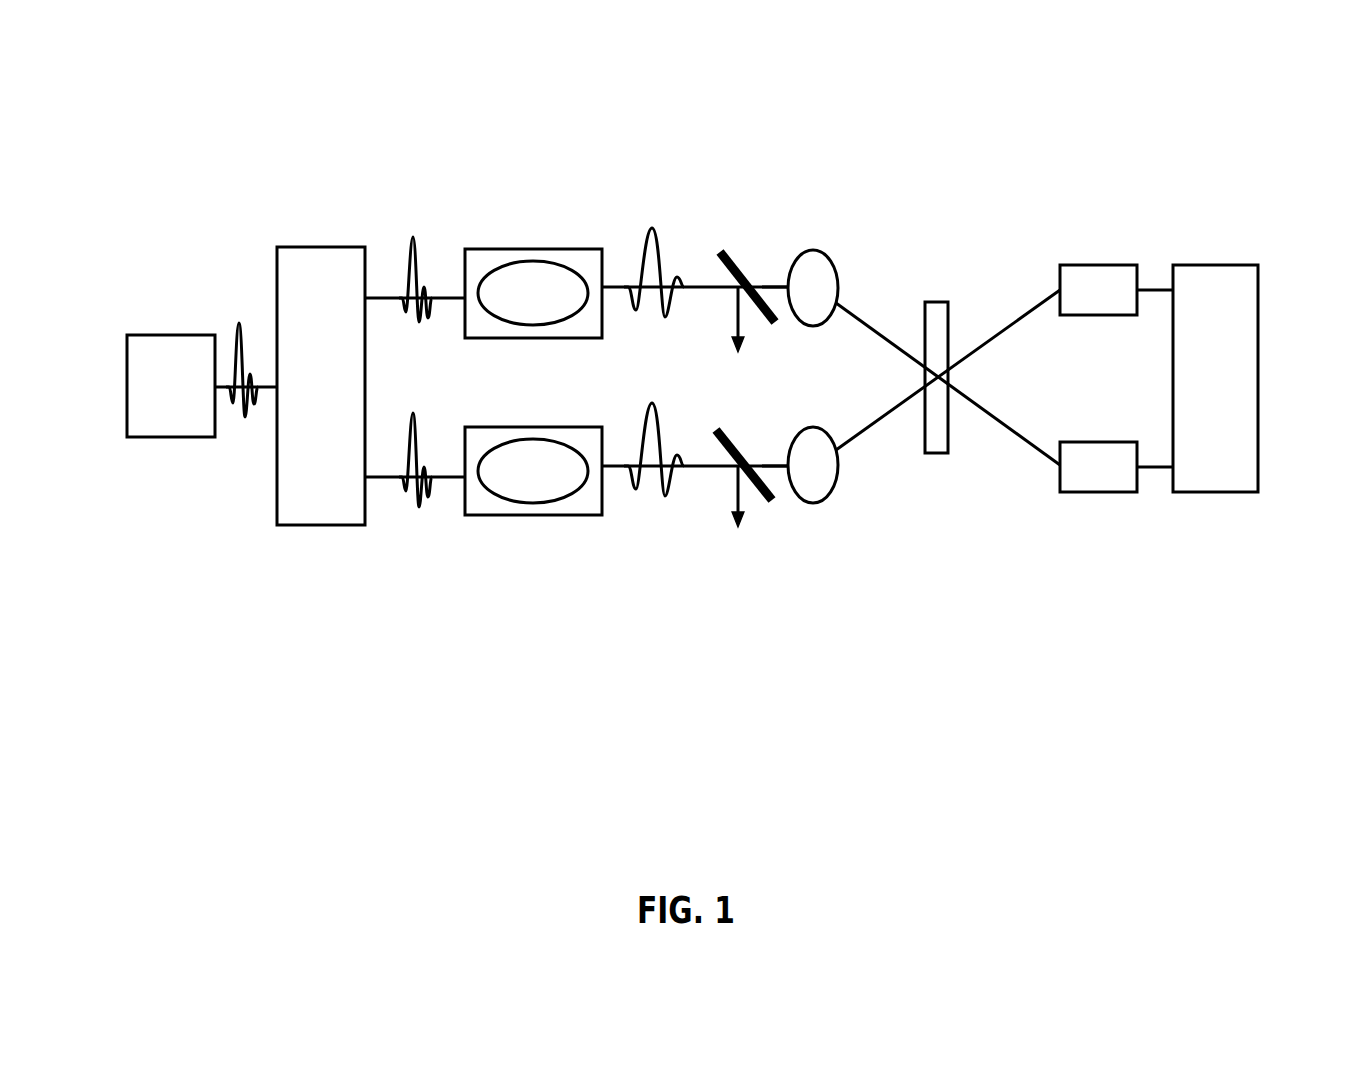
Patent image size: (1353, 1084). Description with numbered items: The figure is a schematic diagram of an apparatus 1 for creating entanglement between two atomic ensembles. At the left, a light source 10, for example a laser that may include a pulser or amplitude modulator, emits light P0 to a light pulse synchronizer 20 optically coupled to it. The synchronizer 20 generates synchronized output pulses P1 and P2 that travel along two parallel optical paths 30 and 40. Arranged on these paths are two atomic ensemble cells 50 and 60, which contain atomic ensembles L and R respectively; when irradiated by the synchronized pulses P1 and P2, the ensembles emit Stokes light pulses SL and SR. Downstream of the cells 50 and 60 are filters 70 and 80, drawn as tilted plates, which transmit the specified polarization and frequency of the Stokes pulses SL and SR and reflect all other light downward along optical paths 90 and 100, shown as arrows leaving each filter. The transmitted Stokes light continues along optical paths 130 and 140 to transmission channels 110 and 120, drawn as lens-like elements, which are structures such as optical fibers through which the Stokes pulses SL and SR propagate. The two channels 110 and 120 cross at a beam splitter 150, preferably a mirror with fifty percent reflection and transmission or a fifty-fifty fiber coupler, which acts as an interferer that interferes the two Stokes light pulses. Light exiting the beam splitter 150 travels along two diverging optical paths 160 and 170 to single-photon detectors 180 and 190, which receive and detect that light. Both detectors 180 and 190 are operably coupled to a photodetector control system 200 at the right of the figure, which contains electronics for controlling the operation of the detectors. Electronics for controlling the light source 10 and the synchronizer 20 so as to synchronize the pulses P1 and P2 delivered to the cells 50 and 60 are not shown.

The apparatus 1 is at (278, 122).
The light source 10 is at (171, 386).
The light pulse synchronizer 20 is at (321, 386).
The optical path 30 is at (390, 300).
The optical path 40 is at (387, 477).
The atomic ensemble cell 50 is at (527, 249).
The atomic ensemble cell 60 is at (538, 515).
The filter 70 is at (764, 328).
The filter 80 is at (722, 430).
The optical path 90 is at (730, 333).
The optical path 100 is at (733, 505).
The transmission channel 110 is at (813, 250).
The transmission channel 120 is at (810, 503).
The optical path 130 is at (762, 287).
The optical path 140 is at (762, 460).
The beam splitter 150 is at (929, 302).
The optical path 160 is at (988, 345).
The optical path 170 is at (1008, 433).
The single-photon detector 180 is at (1098, 290).
The single-photon detector 190 is at (1098, 467).
The photodetector control system 200 is at (1215, 378).
The light P0 is at (238, 323).
The synchronized light pulse P1 is at (412, 250).
The synchronized light pulse P2 is at (415, 420).
The Stokes light pulse SL is at (650, 250).
The Stokes light pulse SR is at (648, 428).